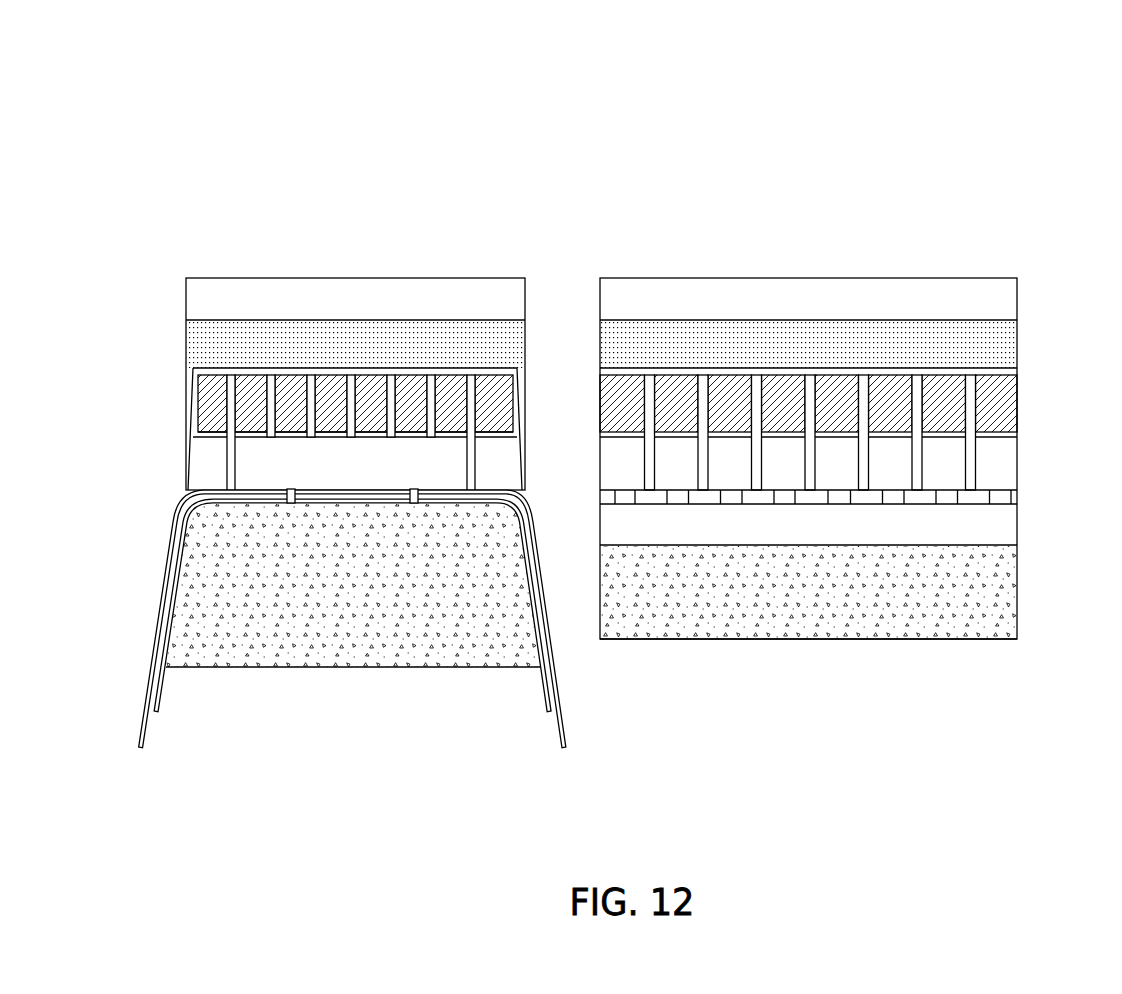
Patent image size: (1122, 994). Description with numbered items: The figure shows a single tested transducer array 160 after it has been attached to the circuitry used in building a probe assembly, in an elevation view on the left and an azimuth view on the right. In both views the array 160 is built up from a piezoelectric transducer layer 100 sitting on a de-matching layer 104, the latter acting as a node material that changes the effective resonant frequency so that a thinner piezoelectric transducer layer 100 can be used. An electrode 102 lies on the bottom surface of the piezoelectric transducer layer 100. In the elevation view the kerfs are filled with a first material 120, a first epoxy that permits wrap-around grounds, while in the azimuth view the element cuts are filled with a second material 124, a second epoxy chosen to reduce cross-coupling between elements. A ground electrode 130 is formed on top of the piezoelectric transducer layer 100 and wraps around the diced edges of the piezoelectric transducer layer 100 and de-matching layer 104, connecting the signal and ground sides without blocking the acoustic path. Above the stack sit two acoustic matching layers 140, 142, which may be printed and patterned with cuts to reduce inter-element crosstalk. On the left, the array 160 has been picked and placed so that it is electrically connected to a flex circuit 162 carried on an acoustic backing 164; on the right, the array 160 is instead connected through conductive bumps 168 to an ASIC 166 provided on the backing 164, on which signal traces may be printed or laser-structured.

The piezoelectric transducer layer 100 is at (208, 392).
The electrode 102 is at (218, 434).
The de-matching layer 104 is at (952, 462).
The first material 120 is at (312, 383).
The second material 124 is at (700, 380).
The ground electrode 130 is at (420, 372).
The acoustic matching layer 140 is at (772, 345).
The acoustic matching layer 142 is at (929, 300).
The array 160 is at (630, 118).
The flex circuit 162 is at (156, 632).
The acoustic backing 164 is at (1012, 603).
The ASIC 166 is at (1020, 533).
The conductive bumps 168 is at (1010, 500).